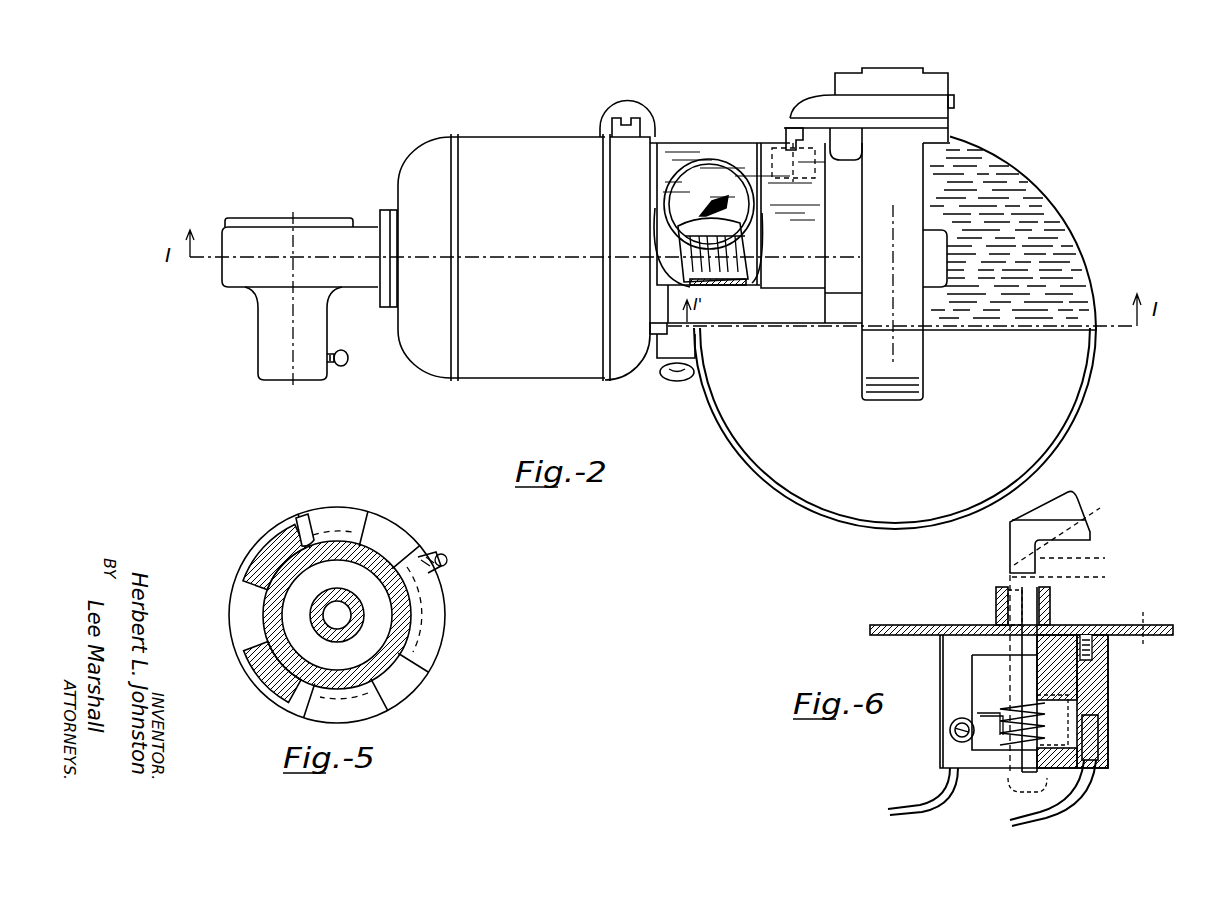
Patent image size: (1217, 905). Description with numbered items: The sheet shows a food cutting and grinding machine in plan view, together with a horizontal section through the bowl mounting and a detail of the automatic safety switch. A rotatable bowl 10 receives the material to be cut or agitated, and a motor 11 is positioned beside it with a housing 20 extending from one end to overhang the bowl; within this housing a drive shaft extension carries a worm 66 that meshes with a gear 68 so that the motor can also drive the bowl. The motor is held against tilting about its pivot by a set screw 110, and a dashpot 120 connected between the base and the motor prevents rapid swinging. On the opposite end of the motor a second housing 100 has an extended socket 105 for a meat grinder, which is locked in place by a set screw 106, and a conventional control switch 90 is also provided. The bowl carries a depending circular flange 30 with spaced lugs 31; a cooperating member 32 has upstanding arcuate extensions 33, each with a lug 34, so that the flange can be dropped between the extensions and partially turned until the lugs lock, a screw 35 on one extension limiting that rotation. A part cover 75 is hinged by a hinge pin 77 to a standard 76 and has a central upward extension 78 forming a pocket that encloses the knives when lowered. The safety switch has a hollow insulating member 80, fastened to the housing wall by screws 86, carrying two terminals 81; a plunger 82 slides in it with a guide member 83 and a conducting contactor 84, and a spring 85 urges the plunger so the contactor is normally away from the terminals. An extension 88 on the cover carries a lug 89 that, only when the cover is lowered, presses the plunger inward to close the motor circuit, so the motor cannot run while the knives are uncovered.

In FIG. 2, the bowl 10 is at (1080, 412).
In FIG. 2, the motor 11 is at (529, 146).
In FIG. 2, the housing 20 is at (738, 148).
In FIG. 5, the circular flange 30 is at (389, 562).
In FIG. 5, the lugs 31 is at (283, 558).
In FIG. 5, the member 32 is at (446, 645).
In FIG. 5, the arcuate extensions 33 is at (336, 516).
In FIG. 5, the lug 34 is at (300, 519).
In FIG. 5, the screw 35 is at (431, 567).
In FIG. 2, the worm 66 is at (745, 278).
In FIG. 2, the gear 68 is at (696, 255).
In FIG. 2, the cover 75 is at (1018, 181).
In FIG. 2, the standard 76 is at (915, 92).
In FIG. 2, the hinge pin 77 is at (956, 100).
In FIG. 2, the upward extension 78 is at (908, 318).
In FIG. 6, the hollow member 80 is at (1097, 690).
In FIG. 6, the terminals 81 is at (1097, 723).
In FIG. 2, the plunger 82 is at (790, 157).
In FIG. 6, the plunger 82 is at (1025, 580).
In FIG. 6, the guide member 83 is at (1108, 660).
In FIG. 6, the contactor 84 is at (1083, 700).
In FIG. 6, the spring 85 is at (1005, 745).
In FIG. 6, the screws 86 is at (1091, 627).
In FIG. 2, the extension 88 is at (818, 108).
In FIG. 2, the lug 89 is at (801, 130).
In FIG. 6, the lug 89 is at (1040, 550).
In FIG. 2, the control switch 90 is at (708, 198).
In FIG. 2, the second housing 100 is at (235, 240).
In FIG. 2, the extended socket 105 is at (277, 326).
In FIG. 2, the set screw 106 is at (348, 360).
In FIG. 2, the set screw 110 is at (664, 376).
In FIG. 2, the dashpot 120 is at (610, 128).